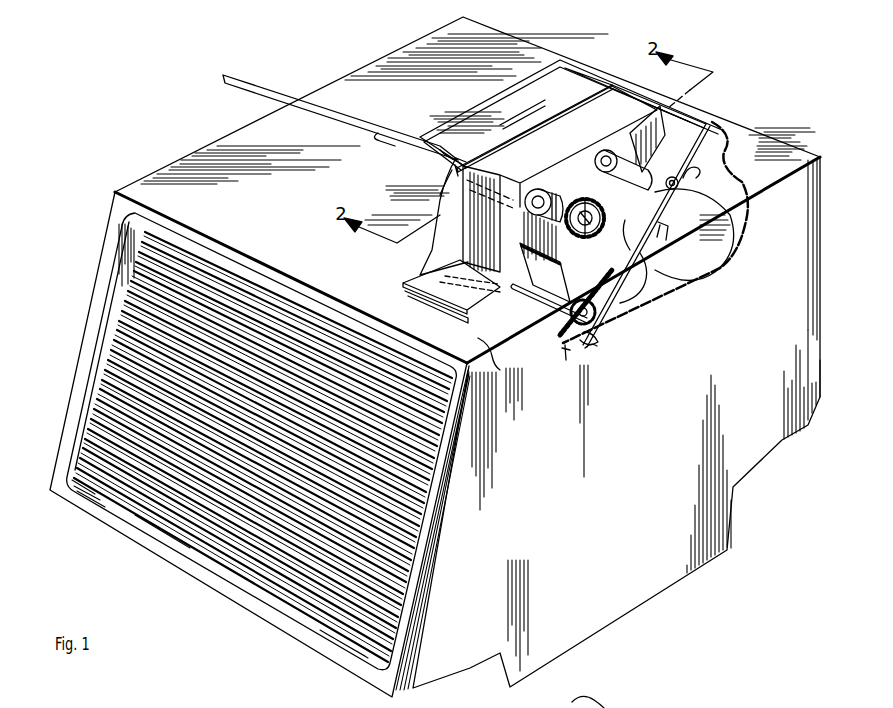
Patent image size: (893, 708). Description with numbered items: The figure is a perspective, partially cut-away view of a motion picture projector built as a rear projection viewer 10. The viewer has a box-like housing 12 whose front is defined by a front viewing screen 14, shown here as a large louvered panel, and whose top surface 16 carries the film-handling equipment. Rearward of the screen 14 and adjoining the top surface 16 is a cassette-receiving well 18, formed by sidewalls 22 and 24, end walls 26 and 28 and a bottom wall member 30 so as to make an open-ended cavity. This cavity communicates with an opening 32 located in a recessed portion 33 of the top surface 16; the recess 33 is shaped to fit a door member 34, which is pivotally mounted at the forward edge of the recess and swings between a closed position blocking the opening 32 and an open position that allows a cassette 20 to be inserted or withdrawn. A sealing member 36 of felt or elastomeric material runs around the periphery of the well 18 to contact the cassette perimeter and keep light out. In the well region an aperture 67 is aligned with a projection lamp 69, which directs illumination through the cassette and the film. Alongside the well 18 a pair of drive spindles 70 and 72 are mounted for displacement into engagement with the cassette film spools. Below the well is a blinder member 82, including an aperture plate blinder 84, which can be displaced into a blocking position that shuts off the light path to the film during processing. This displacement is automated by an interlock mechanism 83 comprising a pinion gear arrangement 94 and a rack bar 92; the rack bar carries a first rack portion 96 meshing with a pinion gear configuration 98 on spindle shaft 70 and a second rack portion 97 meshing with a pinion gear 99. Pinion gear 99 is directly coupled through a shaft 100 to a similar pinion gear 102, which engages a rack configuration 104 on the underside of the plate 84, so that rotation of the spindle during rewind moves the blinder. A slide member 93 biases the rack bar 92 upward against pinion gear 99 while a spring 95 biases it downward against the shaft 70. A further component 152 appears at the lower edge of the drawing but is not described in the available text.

The rear projection viewer 10 is at (186, 146).
The housing 12 is at (72, 378).
The front viewing screen 14 is at (130, 282).
The top surface 16 is at (256, 128).
The cassette-receiving well 18 is at (586, 76).
The cassette 20 is at (605, 110).
The sidewall 22 is at (513, 225).
The sidewall 24 is at (539, 123).
The end wall 26 is at (454, 192).
The end wall 28 is at (622, 97).
The bottom wall member 30 is at (656, 209).
The opening 32 is at (535, 122).
The recessed portion 33 is at (553, 75).
The door member 34 is at (272, 90).
The sealing member 36 is at (443, 168).
The aperture 67 is at (567, 170).
The projection lamp 69 is at (598, 199).
The drive spindle 70 is at (733, 163).
The drive spindle 72 is at (548, 180).
The blinder member 82 is at (450, 316).
The interlock mechanism 83 is at (566, 349).
The aperture plate blinder 84 is at (413, 281).
The rack bar 92 is at (645, 256).
The slide member 93 is at (600, 331).
The pinion gear arrangement 94 is at (606, 316).
The spring 95 is at (665, 231).
The first rack portion 96 is at (683, 177).
The second rack portion 97 is at (600, 334).
The pinion gear configuration 98 is at (679, 183).
The pinion gear 99 is at (567, 279).
The shaft 100 is at (564, 330).
The pinion gear 102 is at (473, 284).
The rack configuration 104 is at (492, 356).
The motor 152 is at (600, 701).